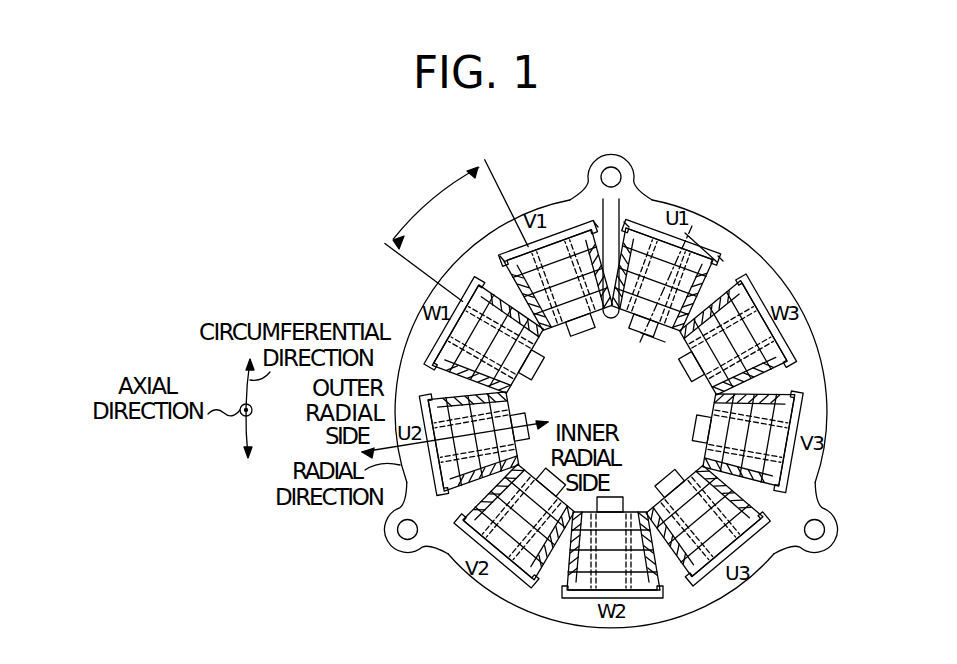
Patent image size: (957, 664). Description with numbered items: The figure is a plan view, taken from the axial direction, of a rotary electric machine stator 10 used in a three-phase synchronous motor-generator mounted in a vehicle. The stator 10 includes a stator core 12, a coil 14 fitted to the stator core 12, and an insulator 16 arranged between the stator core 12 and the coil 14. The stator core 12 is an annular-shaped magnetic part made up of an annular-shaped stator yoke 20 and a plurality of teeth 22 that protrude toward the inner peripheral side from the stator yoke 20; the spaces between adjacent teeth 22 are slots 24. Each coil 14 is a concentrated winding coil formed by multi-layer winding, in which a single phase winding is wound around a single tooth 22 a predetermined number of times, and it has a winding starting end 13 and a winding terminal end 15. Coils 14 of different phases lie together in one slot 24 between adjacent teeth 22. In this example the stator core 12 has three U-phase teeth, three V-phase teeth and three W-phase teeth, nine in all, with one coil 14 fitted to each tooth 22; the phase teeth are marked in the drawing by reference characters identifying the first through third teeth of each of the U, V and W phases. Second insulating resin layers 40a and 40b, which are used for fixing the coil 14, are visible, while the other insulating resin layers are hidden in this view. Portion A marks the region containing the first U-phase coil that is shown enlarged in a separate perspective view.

The rotary electric machine stator 10 is at (350, 268).
The stator core 12 is at (742, 166).
The winding starting end 13 is at (723, 251).
The coil 14 is at (668, 340).
The winding terminal end 15 is at (610, 327).
The insulator 16 is at (705, 260).
The stator yoke 20 is at (545, 214).
The teeth 22 is at (650, 238).
The slots 24 is at (456, 231).
The second insulating resin layer 40a is at (502, 260).
The second insulating resin layer 40b is at (596, 218).
The portion A is at (642, 333).